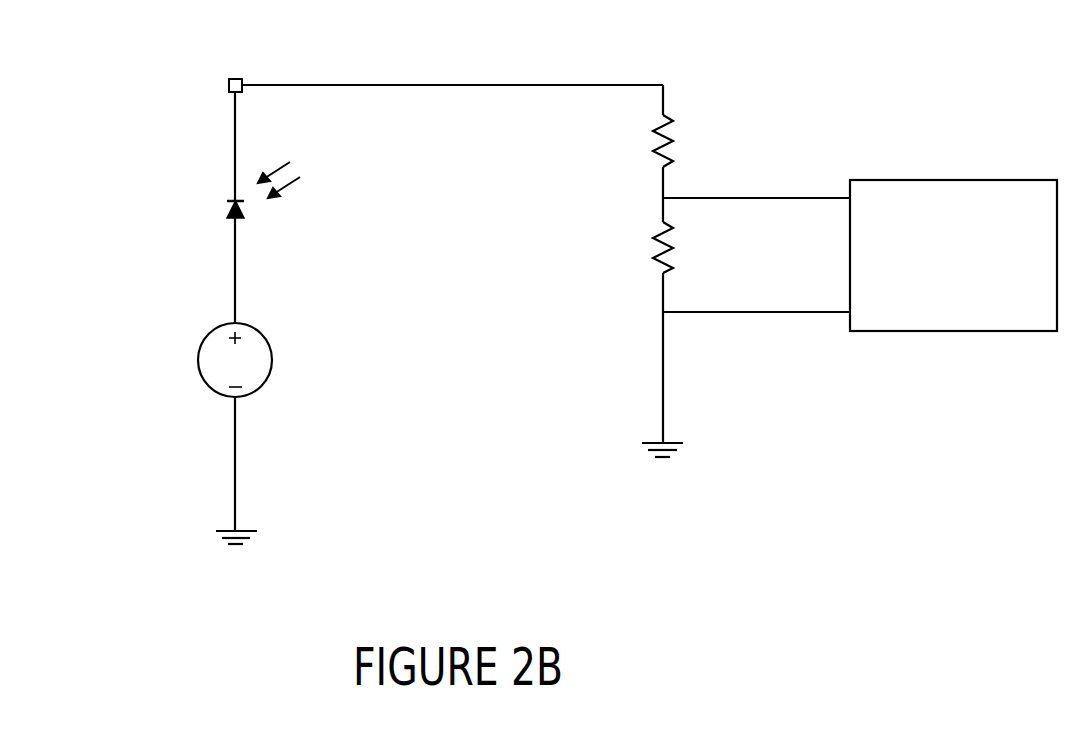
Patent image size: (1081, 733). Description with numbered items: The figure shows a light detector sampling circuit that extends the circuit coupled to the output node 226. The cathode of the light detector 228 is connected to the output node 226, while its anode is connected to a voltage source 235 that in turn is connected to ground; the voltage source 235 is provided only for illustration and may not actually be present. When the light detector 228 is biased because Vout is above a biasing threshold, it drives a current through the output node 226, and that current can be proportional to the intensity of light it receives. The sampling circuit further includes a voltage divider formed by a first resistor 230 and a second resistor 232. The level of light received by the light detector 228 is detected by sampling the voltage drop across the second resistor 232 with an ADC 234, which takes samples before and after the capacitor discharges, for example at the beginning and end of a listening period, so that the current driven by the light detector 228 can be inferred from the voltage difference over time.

The output node 226 is at (236, 79).
The light detector 228 is at (240, 218).
The first resistor 230 is at (663, 100).
The second resistor 232 is at (663, 200).
The ADC 234 is at (1045, 320).
The voltage source 235 is at (272, 350).